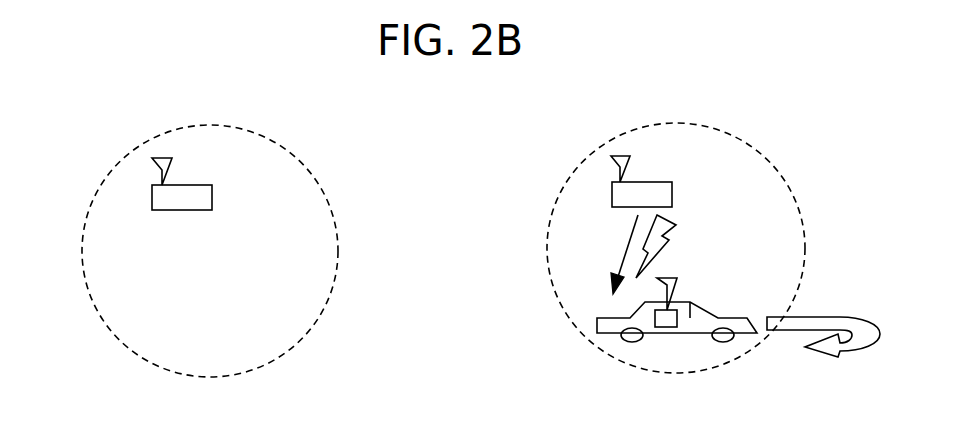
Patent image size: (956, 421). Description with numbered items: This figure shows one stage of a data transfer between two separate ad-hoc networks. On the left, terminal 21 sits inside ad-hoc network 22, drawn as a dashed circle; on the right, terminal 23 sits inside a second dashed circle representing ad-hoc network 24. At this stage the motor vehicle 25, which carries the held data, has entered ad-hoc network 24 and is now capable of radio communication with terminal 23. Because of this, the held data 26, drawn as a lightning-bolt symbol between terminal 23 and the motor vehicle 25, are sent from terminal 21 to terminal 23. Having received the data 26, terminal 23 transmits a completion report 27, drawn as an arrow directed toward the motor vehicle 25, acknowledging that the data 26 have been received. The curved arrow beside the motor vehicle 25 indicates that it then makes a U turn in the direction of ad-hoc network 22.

The terminal 21 is at (152, 193).
The ad-hoc network 22 is at (287, 150).
The terminal 23 is at (612, 190).
The ad-hoc network 24 is at (548, 263).
The motor vehicle 25 is at (597, 323).
The data 26 is at (674, 228).
The completion report 27 is at (628, 259).